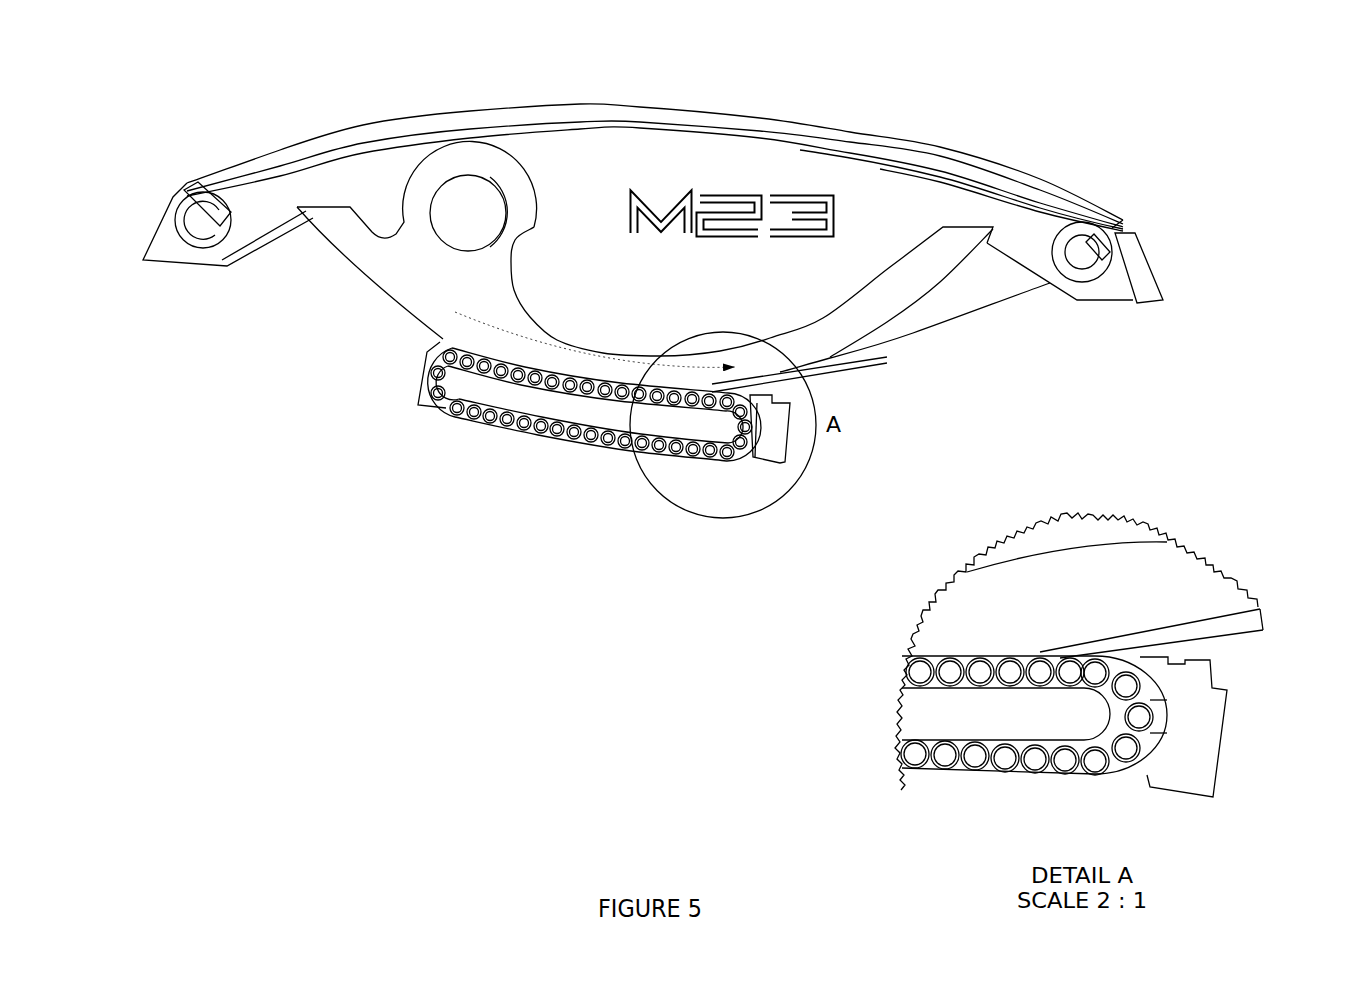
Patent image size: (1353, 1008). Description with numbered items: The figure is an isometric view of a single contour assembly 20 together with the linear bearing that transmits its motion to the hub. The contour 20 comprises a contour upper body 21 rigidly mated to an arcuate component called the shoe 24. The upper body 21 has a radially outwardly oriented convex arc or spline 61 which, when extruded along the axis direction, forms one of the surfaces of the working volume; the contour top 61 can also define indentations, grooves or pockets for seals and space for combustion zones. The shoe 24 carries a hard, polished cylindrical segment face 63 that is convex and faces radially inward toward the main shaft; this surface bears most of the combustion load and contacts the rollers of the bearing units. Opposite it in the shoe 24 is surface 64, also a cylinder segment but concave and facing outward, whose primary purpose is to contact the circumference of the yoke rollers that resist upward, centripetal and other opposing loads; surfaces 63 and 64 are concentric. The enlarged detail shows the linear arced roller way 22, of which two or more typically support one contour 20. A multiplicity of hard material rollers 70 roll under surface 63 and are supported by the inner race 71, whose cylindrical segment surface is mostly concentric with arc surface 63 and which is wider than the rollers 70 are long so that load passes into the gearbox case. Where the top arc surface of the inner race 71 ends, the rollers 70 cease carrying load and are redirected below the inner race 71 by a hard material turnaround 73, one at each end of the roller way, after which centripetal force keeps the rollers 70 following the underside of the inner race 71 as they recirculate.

The contour assembly 20 is at (990, 298).
The contour upper body 21 is at (157, 212).
The linear arced roller way 22 is at (440, 420).
The shoe 24 is at (394, 276).
The convex arc or spline 61 is at (922, 146).
The cylindrical segment face 63 is at (900, 338).
The concave cylinder segment surface 64 is at (898, 258).
The rollers 70 is at (973, 757).
The inner race 71 is at (977, 718).
The turnaround 73 is at (1197, 737).